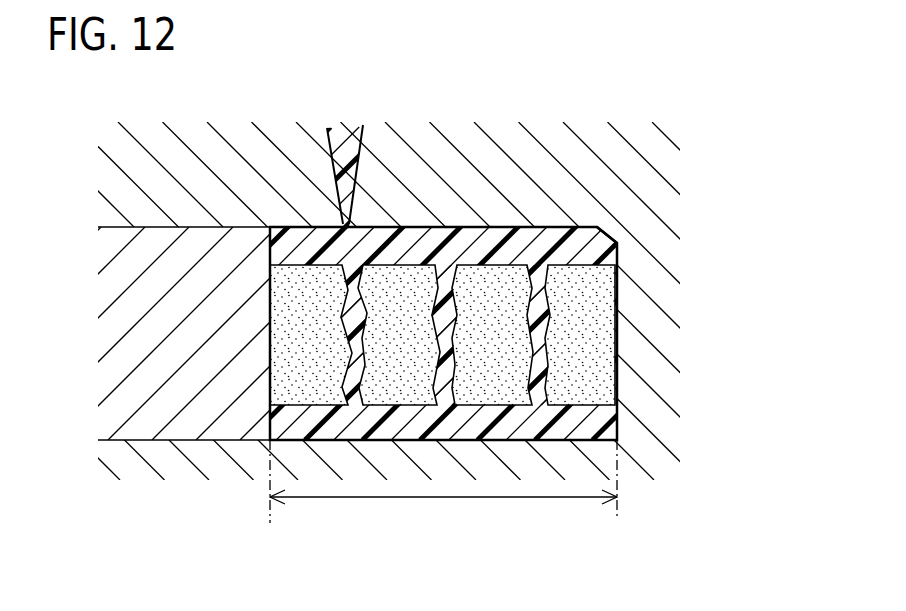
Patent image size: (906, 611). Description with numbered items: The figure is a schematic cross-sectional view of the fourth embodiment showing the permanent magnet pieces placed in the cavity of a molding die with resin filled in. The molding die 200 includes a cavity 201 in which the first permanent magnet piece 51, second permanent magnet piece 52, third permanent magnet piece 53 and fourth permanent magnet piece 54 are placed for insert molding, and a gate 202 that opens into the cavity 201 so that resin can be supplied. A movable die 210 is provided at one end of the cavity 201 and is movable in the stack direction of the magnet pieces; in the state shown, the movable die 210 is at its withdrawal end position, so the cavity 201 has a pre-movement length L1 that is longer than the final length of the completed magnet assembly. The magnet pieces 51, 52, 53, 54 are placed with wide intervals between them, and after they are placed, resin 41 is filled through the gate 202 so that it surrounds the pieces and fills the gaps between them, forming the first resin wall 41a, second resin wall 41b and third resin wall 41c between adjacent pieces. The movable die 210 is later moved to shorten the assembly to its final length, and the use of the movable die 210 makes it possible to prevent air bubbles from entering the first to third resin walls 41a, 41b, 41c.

The molding die 200 is at (679, 453).
The cavity 201 is at (608, 245).
The gate 202 is at (343, 135).
The movable die 210 is at (189, 349).
The resin 41 is at (598, 226).
The first resin wall 41a is at (350, 290).
The second resin wall 41b is at (440, 280).
The third resin wall 41c is at (537, 278).
The first permanent magnet piece 51 is at (324, 348).
The second permanent magnet piece 52 is at (414, 348).
The third permanent magnet piece 53 is at (506, 348).
The fourth permanent magnet piece 54 is at (592, 348).
The pre-movement length L1 is at (443, 485).